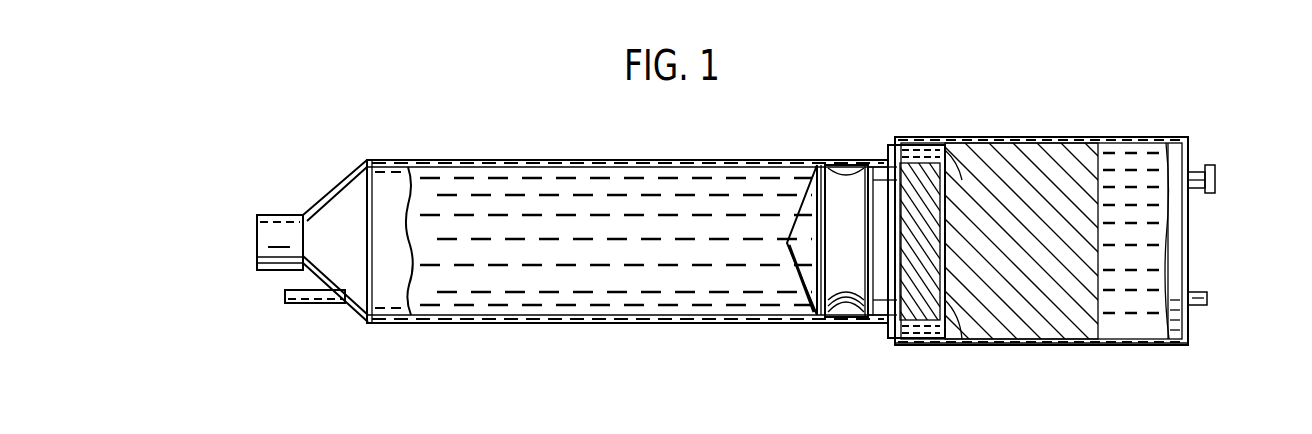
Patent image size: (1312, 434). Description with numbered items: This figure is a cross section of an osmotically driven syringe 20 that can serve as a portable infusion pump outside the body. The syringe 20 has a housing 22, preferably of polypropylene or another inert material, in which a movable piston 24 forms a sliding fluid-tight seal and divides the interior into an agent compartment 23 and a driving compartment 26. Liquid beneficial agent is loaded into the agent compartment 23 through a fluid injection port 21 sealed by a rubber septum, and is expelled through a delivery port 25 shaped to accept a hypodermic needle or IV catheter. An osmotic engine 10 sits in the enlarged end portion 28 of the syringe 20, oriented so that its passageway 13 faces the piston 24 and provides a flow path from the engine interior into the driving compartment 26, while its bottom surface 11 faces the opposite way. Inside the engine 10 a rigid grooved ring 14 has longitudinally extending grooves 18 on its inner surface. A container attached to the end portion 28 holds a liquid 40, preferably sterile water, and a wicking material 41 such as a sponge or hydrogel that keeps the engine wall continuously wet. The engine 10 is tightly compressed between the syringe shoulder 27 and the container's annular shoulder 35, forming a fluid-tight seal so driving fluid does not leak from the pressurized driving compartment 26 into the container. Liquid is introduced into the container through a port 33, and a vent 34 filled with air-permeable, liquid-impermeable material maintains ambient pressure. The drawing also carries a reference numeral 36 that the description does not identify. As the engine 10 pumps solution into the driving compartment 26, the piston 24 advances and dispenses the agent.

The osmotic engine 10 is at (952, 193).
The bottom surface 11 is at (975, 318).
The passageway 13 is at (882, 237).
The grooved ring 14 is at (878, 180).
The grooves 18 is at (898, 305).
The syringe 20 is at (627, 155).
The fluid injection port 21 is at (296, 305).
The housing 22 is at (514, 160).
The agent compartment 23 is at (552, 300).
The piston 24 is at (800, 195).
The delivery port 25 is at (257, 232).
The driving compartment 26 is at (880, 303).
The shoulder 27 is at (887, 162).
The end portion 28 is at (915, 340).
The port 33 is at (1215, 172).
The vent 34 is at (1210, 296).
The annular shoulder 35 is at (960, 150).
The end cap 36 is at (925, 143).
The liquid 40 is at (1150, 237).
The wicking material 41 is at (1068, 318).